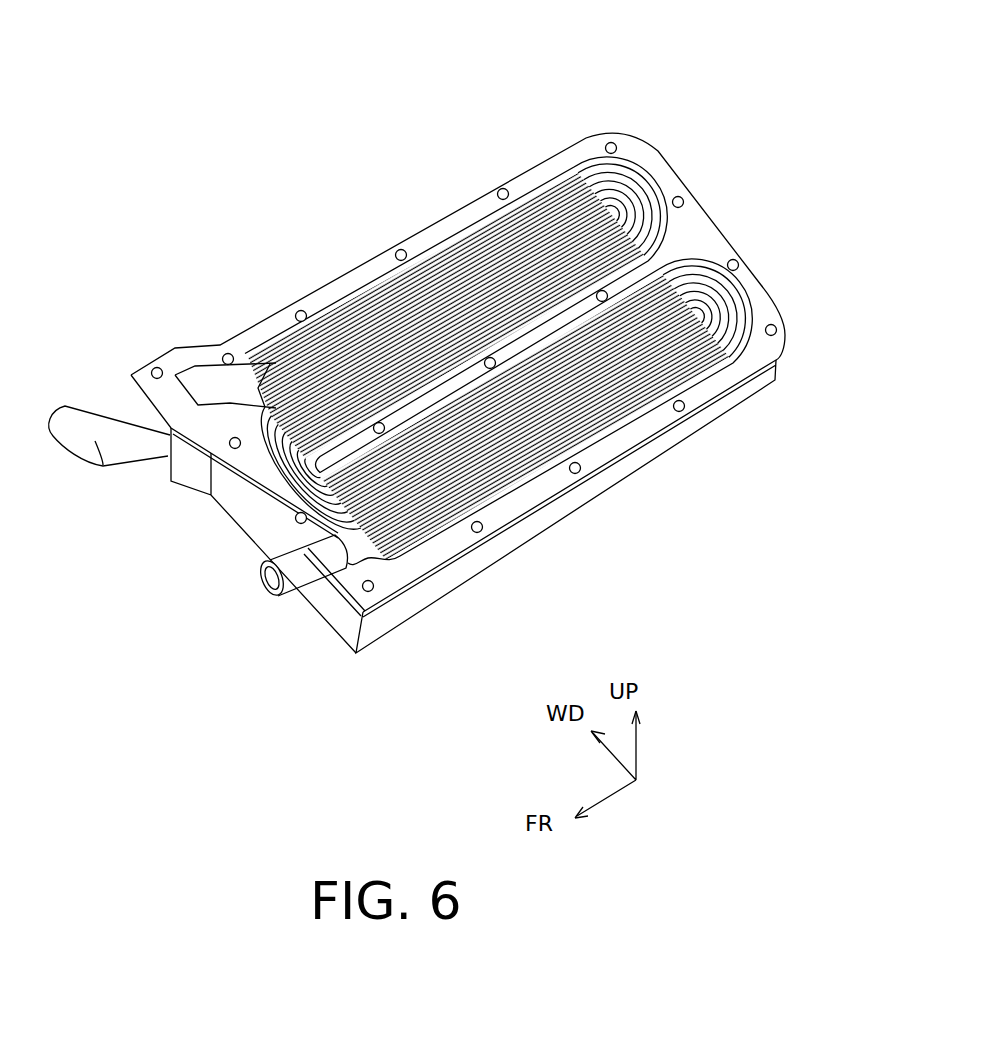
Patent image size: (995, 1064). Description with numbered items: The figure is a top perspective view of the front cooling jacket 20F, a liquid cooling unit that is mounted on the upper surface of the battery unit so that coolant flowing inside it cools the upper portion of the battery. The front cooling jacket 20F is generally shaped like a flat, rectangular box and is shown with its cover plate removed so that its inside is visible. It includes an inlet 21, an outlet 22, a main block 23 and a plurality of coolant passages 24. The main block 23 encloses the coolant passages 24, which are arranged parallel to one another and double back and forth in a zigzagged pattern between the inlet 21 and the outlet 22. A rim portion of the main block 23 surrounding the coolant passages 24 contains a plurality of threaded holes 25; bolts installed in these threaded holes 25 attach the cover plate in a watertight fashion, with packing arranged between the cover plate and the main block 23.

The front cooling jacket 20F is at (365, 116).
The inlet 21 is at (298, 560).
The outlet 22 is at (118, 445).
The main block 23 is at (568, 500).
The coolant passages 24 is at (557, 380).
The threaded holes 25 is at (370, 415).